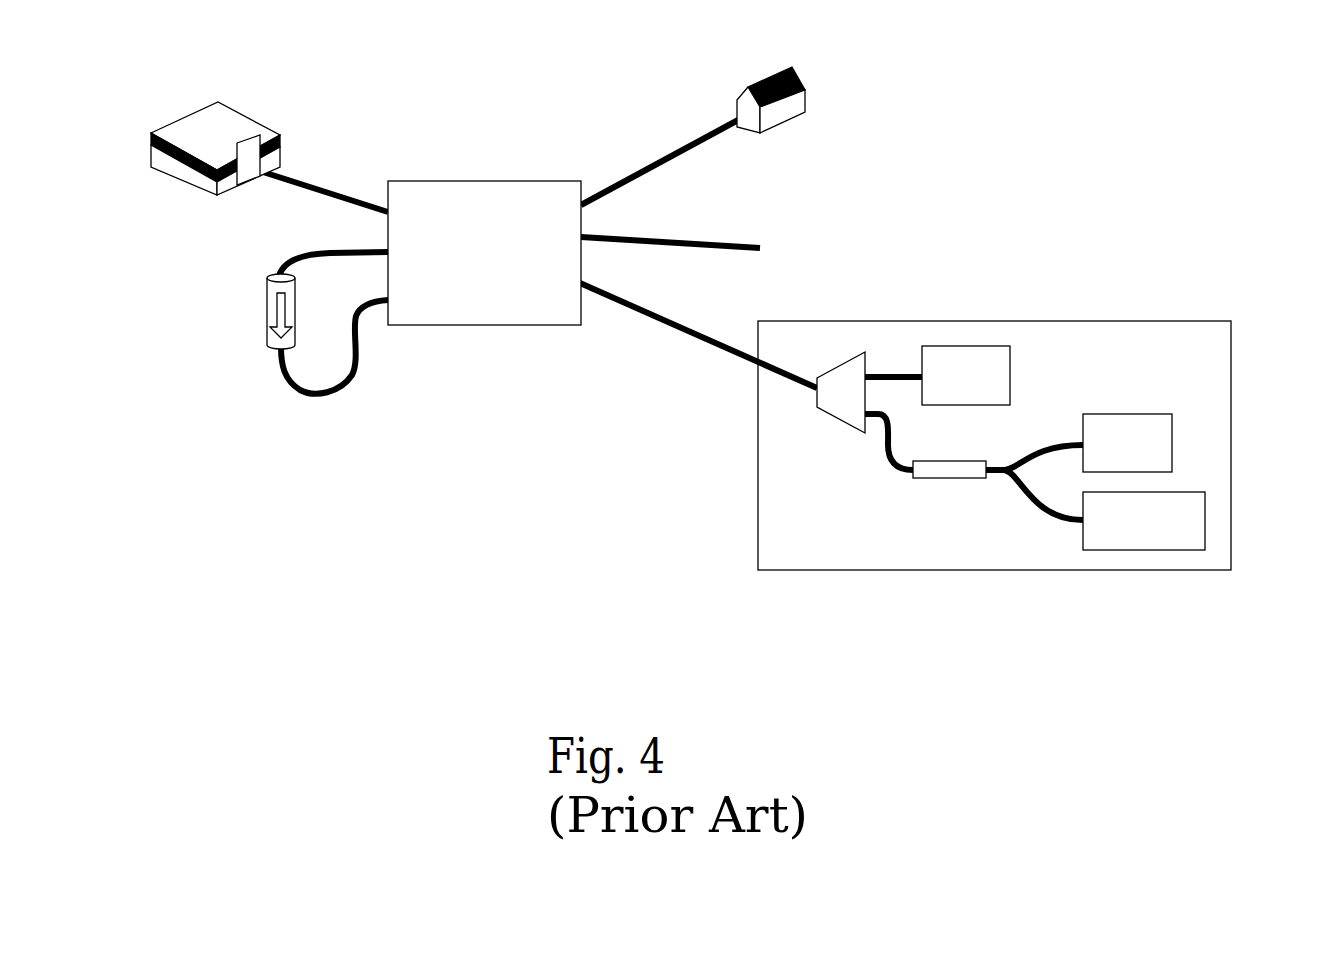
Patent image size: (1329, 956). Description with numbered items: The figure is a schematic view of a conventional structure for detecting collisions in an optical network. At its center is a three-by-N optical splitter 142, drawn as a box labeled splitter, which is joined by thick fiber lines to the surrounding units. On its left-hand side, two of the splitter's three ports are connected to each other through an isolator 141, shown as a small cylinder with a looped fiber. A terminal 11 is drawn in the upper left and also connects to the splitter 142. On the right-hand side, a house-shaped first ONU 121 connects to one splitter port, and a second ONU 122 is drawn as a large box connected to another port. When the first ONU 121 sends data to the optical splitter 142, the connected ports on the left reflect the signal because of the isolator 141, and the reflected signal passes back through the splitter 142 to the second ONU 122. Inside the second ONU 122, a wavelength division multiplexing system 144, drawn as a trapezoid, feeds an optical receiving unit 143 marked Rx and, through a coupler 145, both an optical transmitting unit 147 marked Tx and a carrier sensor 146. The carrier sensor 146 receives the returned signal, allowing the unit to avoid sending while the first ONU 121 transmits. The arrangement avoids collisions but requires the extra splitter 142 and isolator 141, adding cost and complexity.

The optical line terminal 11 is at (243, 113).
The first ONU 121 is at (802, 78).
The second ONU 122 is at (1186, 321).
The isolator 141 is at (266, 325).
The 3×N optical splitter 142 is at (543, 320).
The optical receiving unit 143 is at (977, 343).
The wavelength division multiplexing (WDM) system 144 is at (852, 352).
The coupler 145 is at (942, 474).
The carrier sensor 146 is at (1140, 540).
The optical transmitting unit 147 is at (1105, 413).